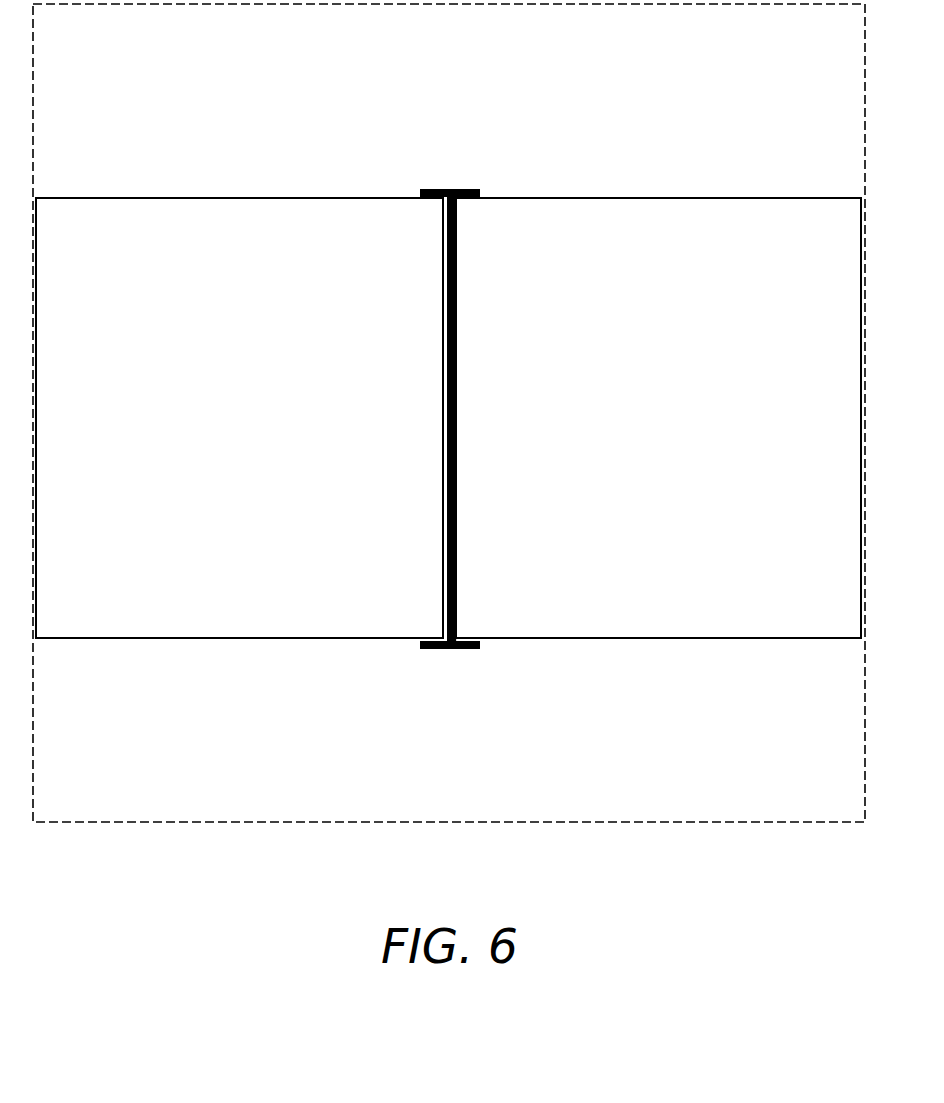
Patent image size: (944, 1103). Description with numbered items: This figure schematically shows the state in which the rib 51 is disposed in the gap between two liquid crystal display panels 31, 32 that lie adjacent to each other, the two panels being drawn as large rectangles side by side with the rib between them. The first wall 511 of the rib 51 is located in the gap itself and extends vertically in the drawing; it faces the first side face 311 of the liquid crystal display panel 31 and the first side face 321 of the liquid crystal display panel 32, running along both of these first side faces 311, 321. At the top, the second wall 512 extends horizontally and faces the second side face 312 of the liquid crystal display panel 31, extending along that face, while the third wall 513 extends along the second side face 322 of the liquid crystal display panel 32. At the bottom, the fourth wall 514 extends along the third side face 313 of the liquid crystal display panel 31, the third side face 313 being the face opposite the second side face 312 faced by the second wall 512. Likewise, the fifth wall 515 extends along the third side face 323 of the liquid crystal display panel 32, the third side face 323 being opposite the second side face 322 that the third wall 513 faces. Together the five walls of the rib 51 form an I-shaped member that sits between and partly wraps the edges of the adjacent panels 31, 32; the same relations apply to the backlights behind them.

The liquid crystal display panel 31 is at (682, 369).
The liquid crystal display panel 32 is at (254, 362).
The first side face 311 is at (453, 458).
The second side face 312 is at (685, 197).
The third side face 313 is at (807, 637).
The first side face 321 is at (440, 387).
The second side face 322 is at (82, 198).
The third side face 323 is at (157, 638).
The rib 51 is at (482, 379).
The first wall 511 is at (453, 303).
The second wall 512 is at (467, 189).
The third wall 513 is at (430, 190).
The fourth wall 514 is at (462, 648).
The fifth wall 515 is at (428, 648).